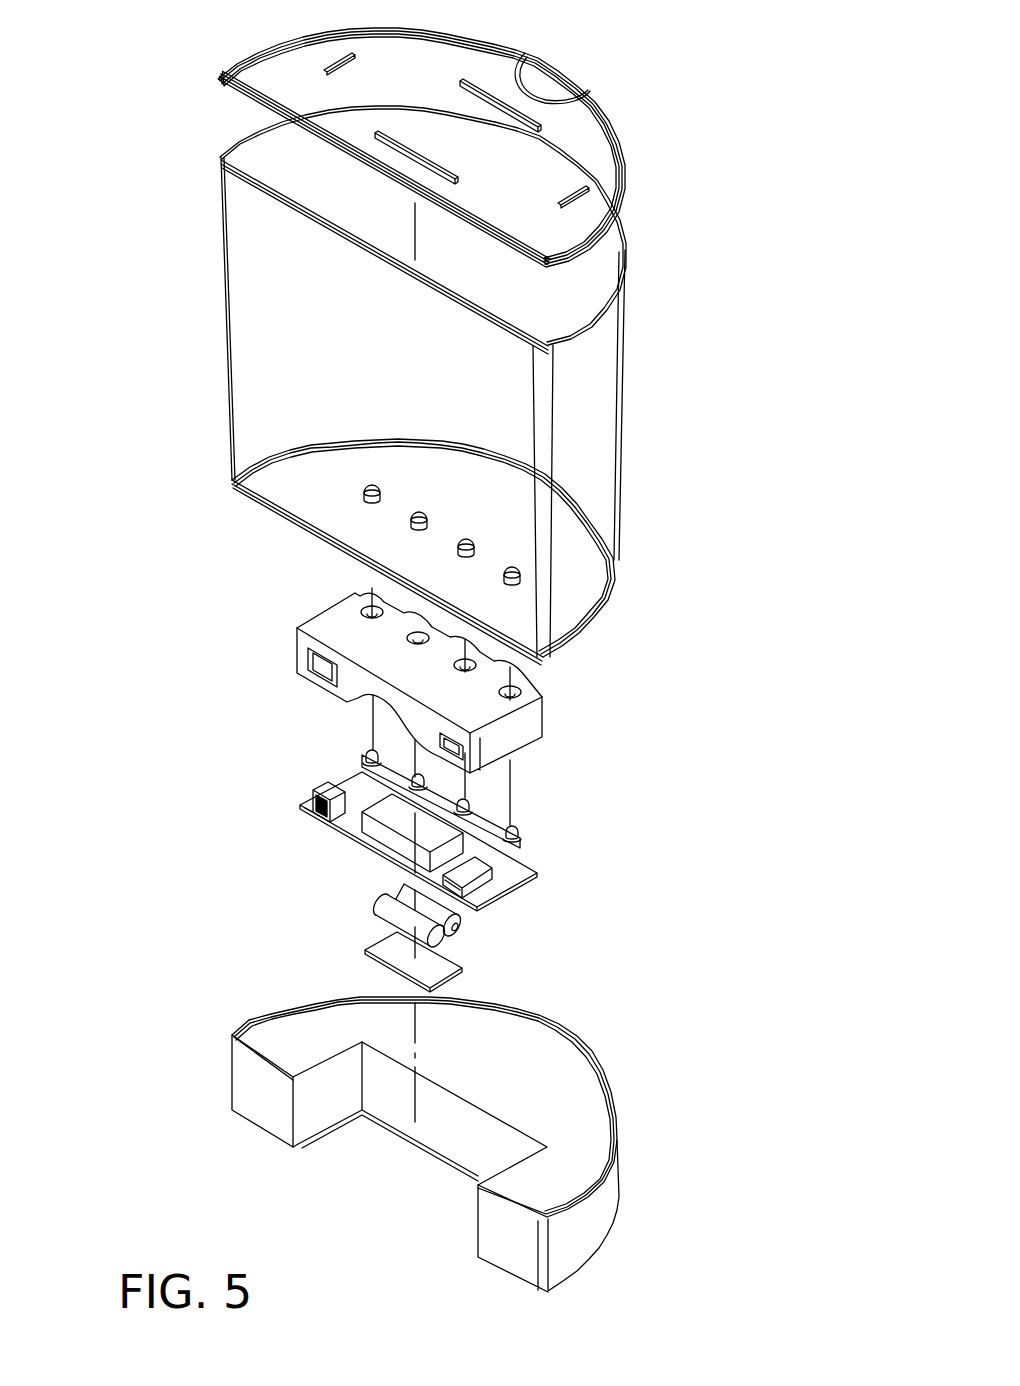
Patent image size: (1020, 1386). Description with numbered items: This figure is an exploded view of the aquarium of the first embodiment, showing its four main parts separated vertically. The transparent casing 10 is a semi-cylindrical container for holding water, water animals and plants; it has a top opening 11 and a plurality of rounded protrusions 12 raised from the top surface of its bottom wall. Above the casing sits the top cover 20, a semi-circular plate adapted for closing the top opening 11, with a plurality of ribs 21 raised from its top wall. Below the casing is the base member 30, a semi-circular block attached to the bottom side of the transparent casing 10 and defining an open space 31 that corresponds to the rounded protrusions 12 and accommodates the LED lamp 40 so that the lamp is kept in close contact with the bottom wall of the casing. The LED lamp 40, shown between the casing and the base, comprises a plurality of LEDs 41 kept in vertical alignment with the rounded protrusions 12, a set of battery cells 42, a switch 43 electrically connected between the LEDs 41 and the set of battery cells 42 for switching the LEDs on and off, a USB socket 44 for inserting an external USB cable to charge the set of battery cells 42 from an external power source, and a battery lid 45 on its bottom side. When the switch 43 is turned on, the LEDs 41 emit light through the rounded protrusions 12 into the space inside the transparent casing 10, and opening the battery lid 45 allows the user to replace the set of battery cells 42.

The transparent casing 10 is at (413, 385).
The top opening 11 is at (560, 310).
The rounded protrusions 12 is at (512, 567).
The top cover 20 is at (624, 183).
The ribs 21 is at (375, 133).
The base member 30 is at (478, 1145).
The open space 31 is at (455, 1180).
The LED lamp 40 is at (382, 790).
The LEDs 41 is at (414, 779).
The set of battery cells 42 is at (387, 907).
The switch 43 is at (315, 787).
The USB socket 44 is at (512, 891).
The battery lid 45 is at (440, 963).